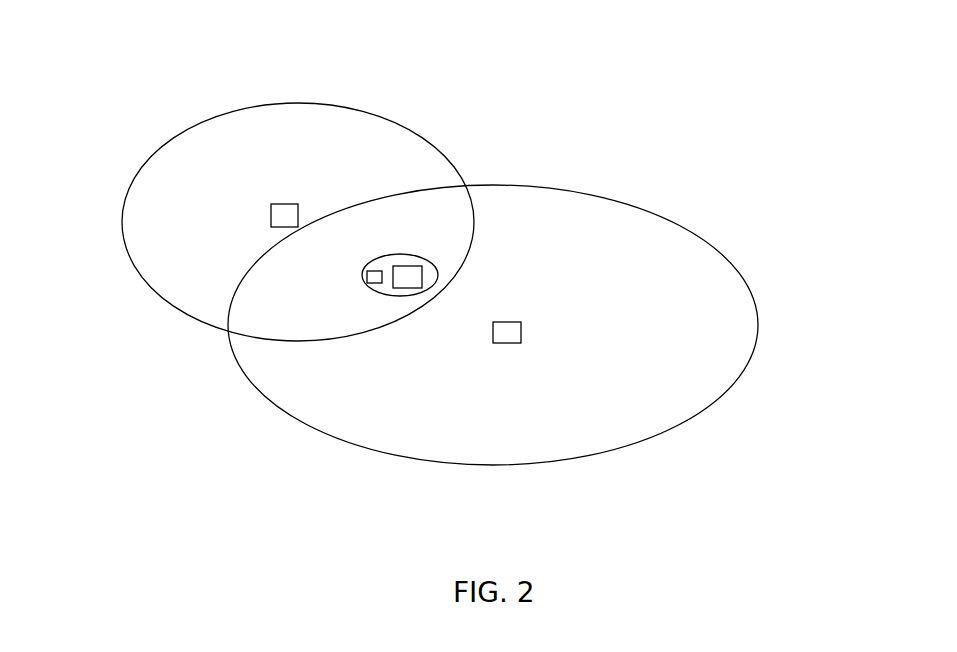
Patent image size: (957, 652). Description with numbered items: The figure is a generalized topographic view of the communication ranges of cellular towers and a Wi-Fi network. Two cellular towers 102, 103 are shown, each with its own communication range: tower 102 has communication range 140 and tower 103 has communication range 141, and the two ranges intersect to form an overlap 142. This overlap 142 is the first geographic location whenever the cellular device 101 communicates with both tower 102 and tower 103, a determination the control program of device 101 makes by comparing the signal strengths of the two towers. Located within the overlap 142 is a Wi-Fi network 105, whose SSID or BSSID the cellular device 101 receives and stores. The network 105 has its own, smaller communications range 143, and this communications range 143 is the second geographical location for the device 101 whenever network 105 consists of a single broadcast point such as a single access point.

The tower 102 is at (282, 190).
The communication range 140 is at (423, 122).
The communication range 141 is at (635, 200).
The network 105 is at (417, 259).
The cellular device 101 is at (350, 274).
The overlap 142 is at (262, 302).
The communications range 143 is at (396, 311).
The tower 103 is at (527, 354).